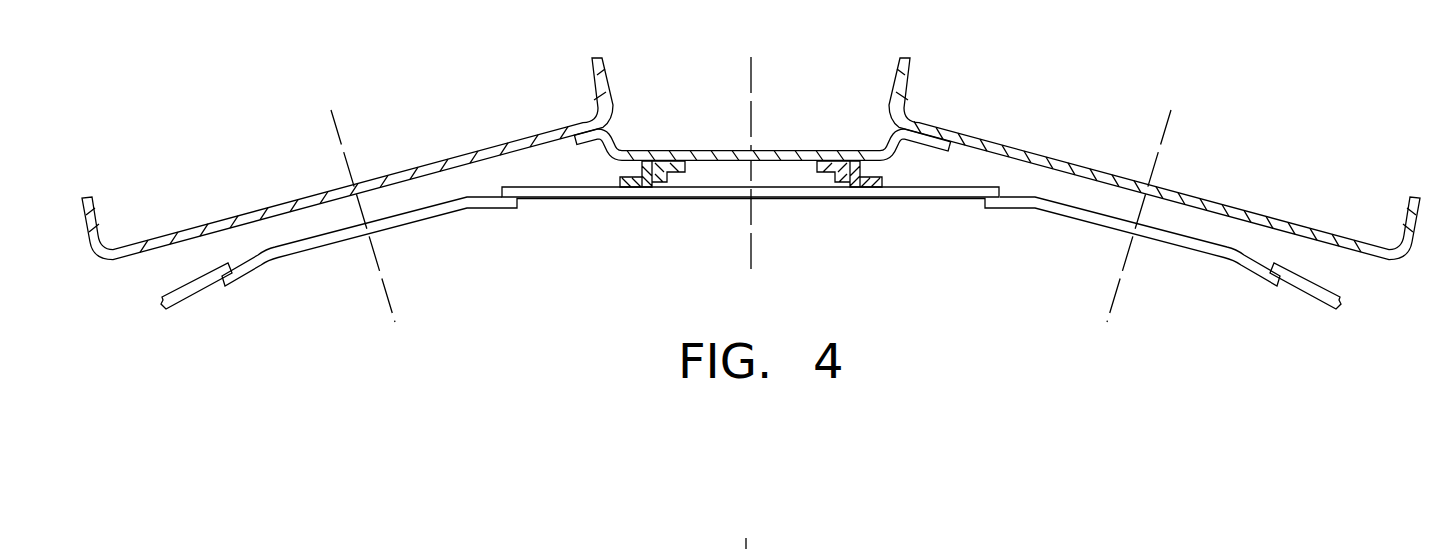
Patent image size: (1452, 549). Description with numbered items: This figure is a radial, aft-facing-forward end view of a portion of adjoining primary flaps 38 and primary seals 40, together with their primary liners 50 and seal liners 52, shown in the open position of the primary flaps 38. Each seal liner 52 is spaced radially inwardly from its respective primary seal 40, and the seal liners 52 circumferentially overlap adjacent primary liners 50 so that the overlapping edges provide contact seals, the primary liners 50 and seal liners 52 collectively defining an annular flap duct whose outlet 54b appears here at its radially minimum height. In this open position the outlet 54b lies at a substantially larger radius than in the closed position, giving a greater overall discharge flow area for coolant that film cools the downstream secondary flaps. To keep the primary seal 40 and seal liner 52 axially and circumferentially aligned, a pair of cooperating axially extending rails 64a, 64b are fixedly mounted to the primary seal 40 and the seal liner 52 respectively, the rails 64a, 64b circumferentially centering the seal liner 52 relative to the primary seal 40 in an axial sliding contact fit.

The primary flap 38 is at (425, 165).
The primary seal 40 is at (710, 150).
The primary liner 50 is at (307, 250).
The seal liner 52 is at (797, 198).
The annular outlet 54b is at (948, 170).
The rail 64a is at (845, 165).
The rail 64b is at (650, 168).